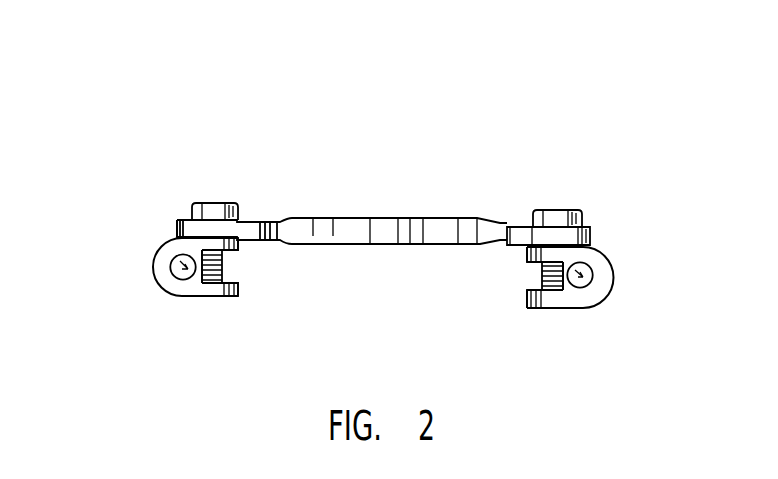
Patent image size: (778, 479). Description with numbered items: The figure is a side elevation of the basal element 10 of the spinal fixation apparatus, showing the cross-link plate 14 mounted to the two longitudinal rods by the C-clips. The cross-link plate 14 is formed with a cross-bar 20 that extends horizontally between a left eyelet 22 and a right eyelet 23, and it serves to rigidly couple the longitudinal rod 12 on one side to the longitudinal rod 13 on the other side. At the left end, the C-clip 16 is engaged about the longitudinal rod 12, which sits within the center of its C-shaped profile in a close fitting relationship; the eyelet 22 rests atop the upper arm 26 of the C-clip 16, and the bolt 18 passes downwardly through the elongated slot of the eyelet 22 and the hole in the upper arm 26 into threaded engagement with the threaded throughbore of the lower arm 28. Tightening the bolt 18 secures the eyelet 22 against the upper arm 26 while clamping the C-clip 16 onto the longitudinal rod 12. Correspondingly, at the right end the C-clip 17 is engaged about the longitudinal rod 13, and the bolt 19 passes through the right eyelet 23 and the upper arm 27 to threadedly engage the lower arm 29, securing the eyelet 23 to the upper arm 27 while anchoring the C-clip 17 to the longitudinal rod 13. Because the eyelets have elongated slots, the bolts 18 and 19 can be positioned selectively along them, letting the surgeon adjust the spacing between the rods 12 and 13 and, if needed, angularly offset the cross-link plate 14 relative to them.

The basal element of the spinal fixation apparatus 10 is at (550, 155).
The longitudinal rod 12 is at (185, 270).
The longitudinal rod 13 is at (603, 298).
The cross-link plate 14 is at (378, 224).
The C-clip 16 is at (160, 267).
The C-clip 17 is at (603, 278).
The bolt 18 is at (214, 212).
The bolt 19 is at (556, 218).
The cross-bar 20 is at (430, 234).
The left eyelet 22 is at (240, 228).
The right eyelet 23 is at (527, 232).
The upper arm 26 is at (207, 245).
The upper arm 27 is at (558, 253).
The lower arm 28 is at (218, 300).
The lower arm 29 is at (548, 300).